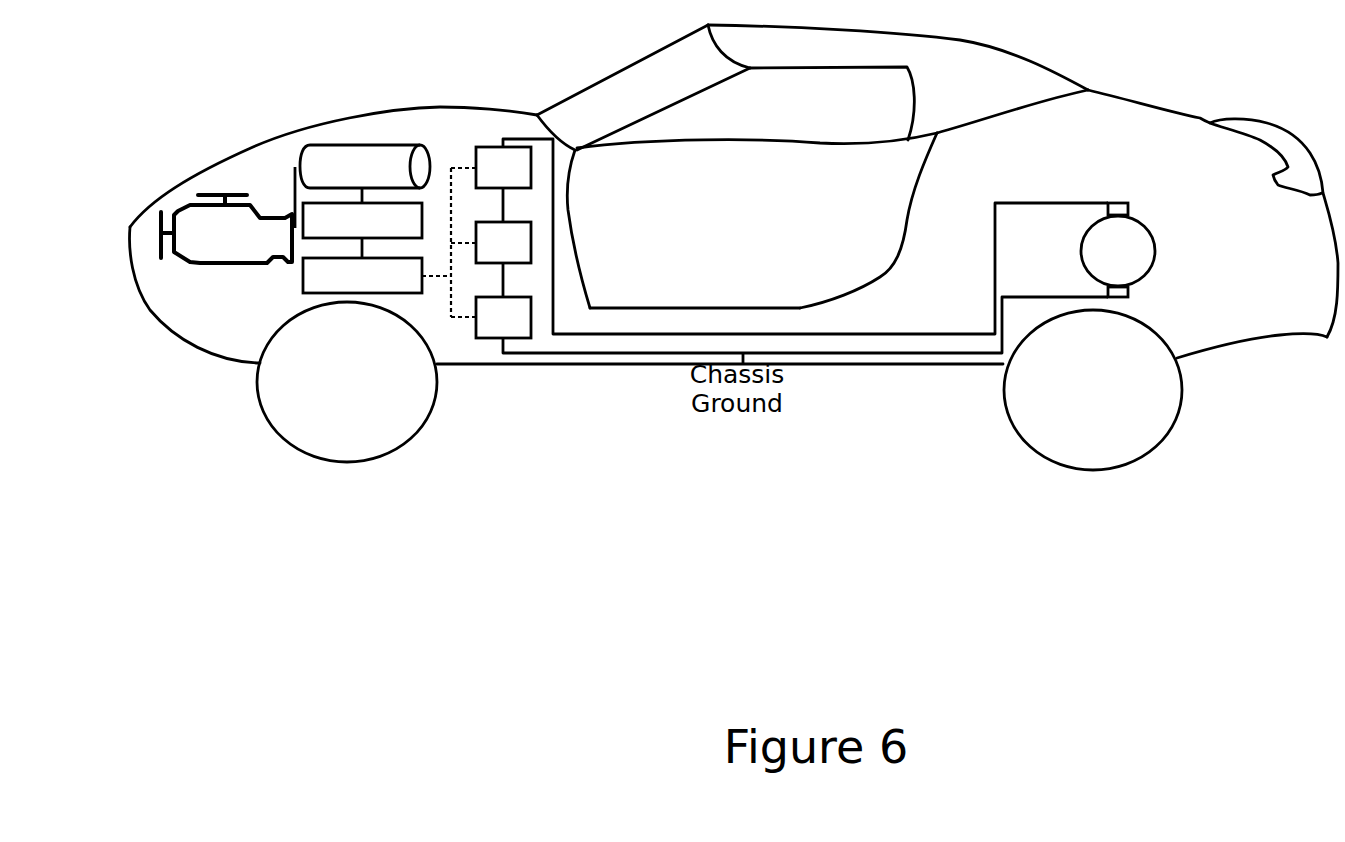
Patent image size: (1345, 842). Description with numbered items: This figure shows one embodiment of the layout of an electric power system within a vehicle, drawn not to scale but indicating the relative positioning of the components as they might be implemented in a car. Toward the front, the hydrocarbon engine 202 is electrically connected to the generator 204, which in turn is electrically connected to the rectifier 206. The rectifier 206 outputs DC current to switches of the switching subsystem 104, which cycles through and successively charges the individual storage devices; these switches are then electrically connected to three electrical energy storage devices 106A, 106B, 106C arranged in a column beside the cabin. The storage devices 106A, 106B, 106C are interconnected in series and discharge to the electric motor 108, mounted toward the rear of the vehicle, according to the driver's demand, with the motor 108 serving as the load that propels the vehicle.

The switching subsystem 104 is at (377, 275).
The electrical energy storage device 106A is at (503, 184).
The electrical energy storage device 106B is at (503, 259).
The electrical energy storage device 106C is at (503, 317).
The electric motor 108 is at (1118, 250).
The hydrocarbon engine 202 is at (226, 229).
The generator 204 is at (365, 174).
The rectifier 206 is at (362, 230).